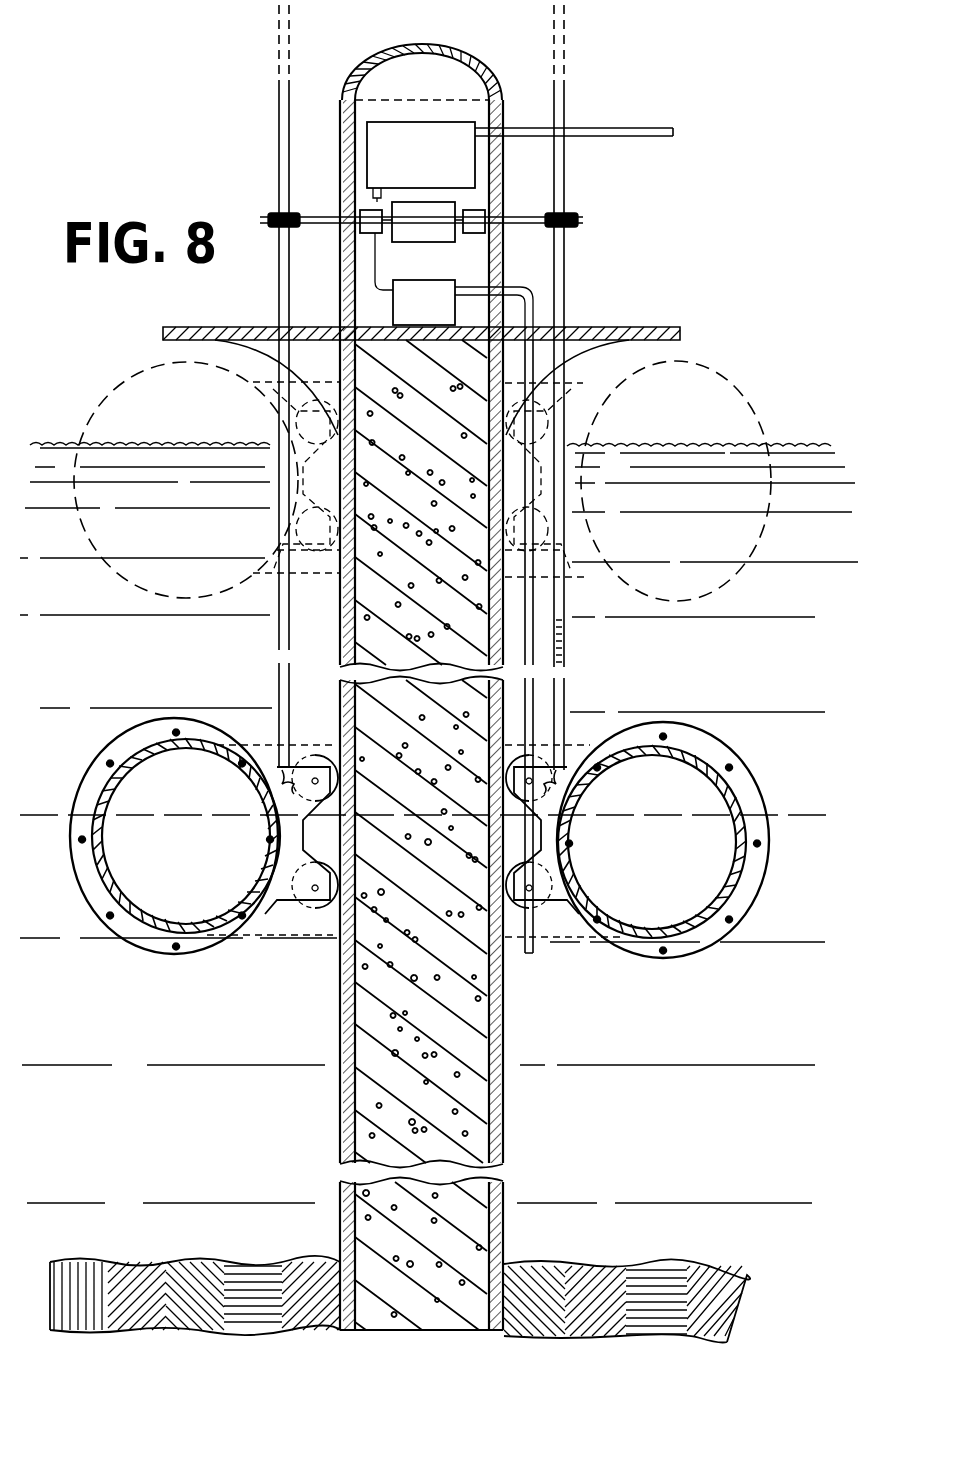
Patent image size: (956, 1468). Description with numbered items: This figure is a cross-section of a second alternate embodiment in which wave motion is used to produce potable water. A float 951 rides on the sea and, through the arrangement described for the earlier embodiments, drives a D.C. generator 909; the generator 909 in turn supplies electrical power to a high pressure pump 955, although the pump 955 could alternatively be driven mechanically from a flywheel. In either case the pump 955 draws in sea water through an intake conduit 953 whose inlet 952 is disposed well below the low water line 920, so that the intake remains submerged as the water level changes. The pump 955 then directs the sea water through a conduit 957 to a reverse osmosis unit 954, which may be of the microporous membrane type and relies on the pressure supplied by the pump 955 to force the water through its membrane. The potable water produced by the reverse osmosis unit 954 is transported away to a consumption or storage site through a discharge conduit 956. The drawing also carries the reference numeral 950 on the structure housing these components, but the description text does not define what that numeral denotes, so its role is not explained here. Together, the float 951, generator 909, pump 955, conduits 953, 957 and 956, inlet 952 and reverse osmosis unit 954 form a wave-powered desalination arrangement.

The pile with dome cap 950 is at (452, 60).
The float 951 is at (722, 373).
The inlet 952 is at (525, 954).
The intake conduit 953 is at (535, 694).
The reverse osmosis unit 954 is at (411, 161).
The high pressure pump 955 is at (404, 309).
The discharge conduit 956 is at (628, 131).
The conduit 957 is at (343, 280).
The D.C. generator 909 is at (403, 234).
The low water line 920 is at (800, 814).